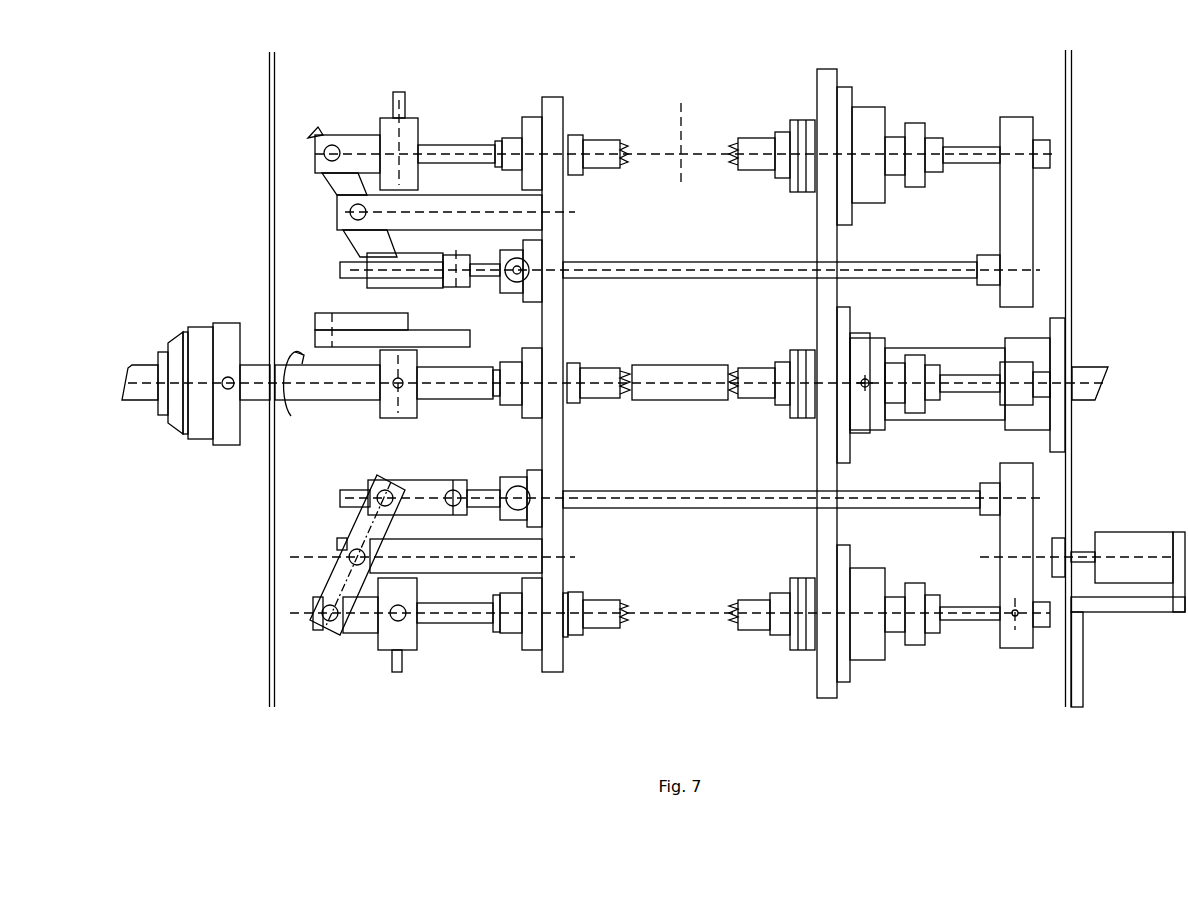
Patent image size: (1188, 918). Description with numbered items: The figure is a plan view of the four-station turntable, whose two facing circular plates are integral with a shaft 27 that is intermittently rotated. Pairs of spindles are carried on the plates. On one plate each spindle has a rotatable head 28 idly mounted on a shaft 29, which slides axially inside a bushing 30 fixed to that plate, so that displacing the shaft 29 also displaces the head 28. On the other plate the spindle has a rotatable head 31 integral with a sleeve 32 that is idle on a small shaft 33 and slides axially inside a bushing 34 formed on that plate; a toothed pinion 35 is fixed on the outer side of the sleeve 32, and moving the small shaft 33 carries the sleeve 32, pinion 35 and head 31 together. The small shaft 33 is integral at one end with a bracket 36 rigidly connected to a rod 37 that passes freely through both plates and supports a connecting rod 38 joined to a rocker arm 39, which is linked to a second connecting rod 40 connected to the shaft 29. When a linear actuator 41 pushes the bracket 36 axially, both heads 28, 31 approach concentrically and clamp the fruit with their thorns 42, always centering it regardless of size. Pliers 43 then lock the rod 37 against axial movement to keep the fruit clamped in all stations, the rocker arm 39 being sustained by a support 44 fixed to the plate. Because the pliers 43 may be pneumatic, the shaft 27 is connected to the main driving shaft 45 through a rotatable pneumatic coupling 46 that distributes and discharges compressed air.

The shaft 27 is at (325, 403).
The rotatable head 28 is at (603, 632).
The shaft 29 is at (455, 624).
The bushing 30 is at (512, 633).
The rotatable head 31 is at (752, 630).
The sleeve 32 is at (892, 595).
The small shaft 33 is at (967, 625).
The bushing 34 is at (865, 662).
The toothed pinion 35 is at (910, 647).
The bracket 36 is at (995, 578).
The rod 37 is at (470, 480).
The connecting rod 38 is at (417, 480).
The rocker arm 39 is at (330, 568).
The second connecting rod 40 is at (357, 636).
The linear actuator 41 is at (1142, 530).
The thorns 42 is at (679, 571).
The pliers 43 is at (511, 477).
The support 44 is at (437, 573).
The main driving shaft 45 is at (147, 360).
The rotatable pneumatic coupling 46 is at (228, 322).